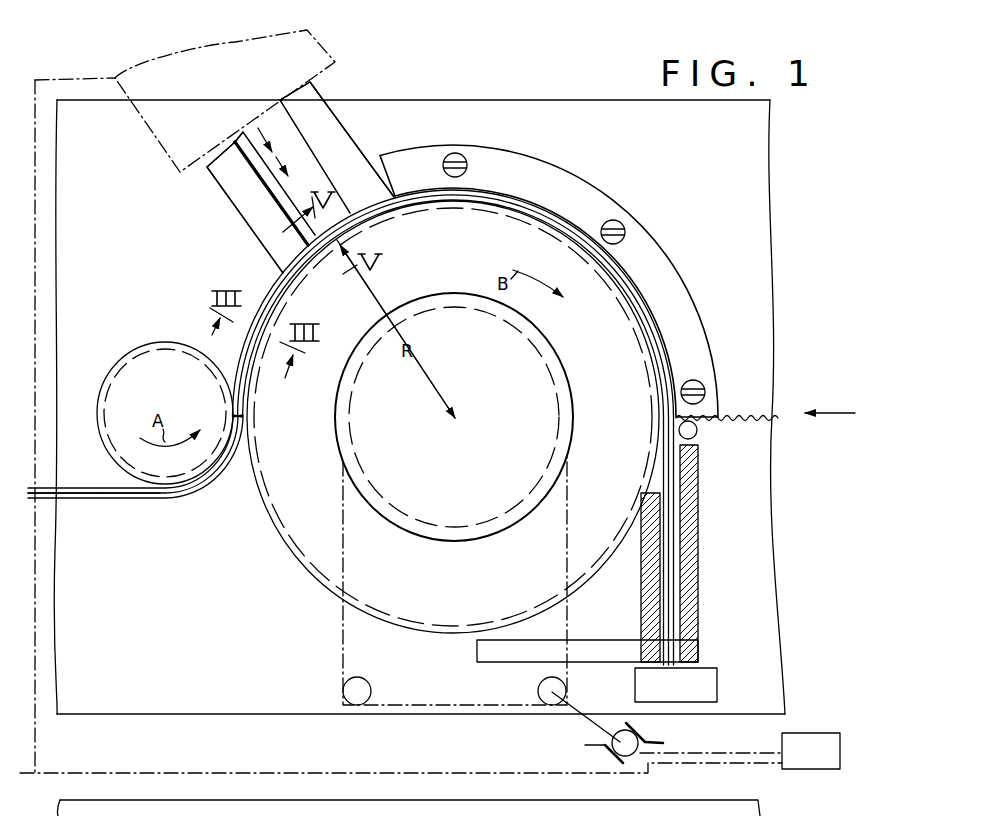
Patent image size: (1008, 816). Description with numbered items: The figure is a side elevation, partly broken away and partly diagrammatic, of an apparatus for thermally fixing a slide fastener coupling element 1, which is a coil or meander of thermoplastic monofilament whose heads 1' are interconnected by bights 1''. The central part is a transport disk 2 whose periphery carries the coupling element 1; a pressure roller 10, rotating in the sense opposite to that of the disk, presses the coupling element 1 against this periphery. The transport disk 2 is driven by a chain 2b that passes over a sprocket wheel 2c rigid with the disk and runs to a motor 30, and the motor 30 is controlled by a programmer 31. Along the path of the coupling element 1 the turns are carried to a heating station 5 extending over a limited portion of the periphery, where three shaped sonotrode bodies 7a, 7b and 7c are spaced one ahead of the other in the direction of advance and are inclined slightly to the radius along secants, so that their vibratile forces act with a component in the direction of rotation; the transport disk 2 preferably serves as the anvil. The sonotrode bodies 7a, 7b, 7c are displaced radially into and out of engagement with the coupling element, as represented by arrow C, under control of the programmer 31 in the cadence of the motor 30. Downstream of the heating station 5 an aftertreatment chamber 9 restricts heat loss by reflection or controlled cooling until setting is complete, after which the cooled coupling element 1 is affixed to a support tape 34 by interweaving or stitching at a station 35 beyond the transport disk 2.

The coupling element 1 is at (351, 427).
The heads 1' is at (69, 465).
The bights 1'' is at (113, 519).
The transport disk 2 is at (302, 538).
The chain 2b is at (342, 662).
The sprocket wheel 2c is at (565, 408).
The heating station 5 is at (365, 142).
The sonotrode body 7a is at (225, 172).
The sonotrode body 7b is at (285, 181).
The sonotrode body 7c is at (328, 127).
The aftertreatment chamber 9 is at (675, 290).
The pressure roller 10 is at (130, 368).
The motor 30 is at (610, 740).
The programmer 31 is at (803, 745).
The support tape 34 is at (742, 418).
The station 35 is at (710, 690).
The arrow C is at (274, 116).